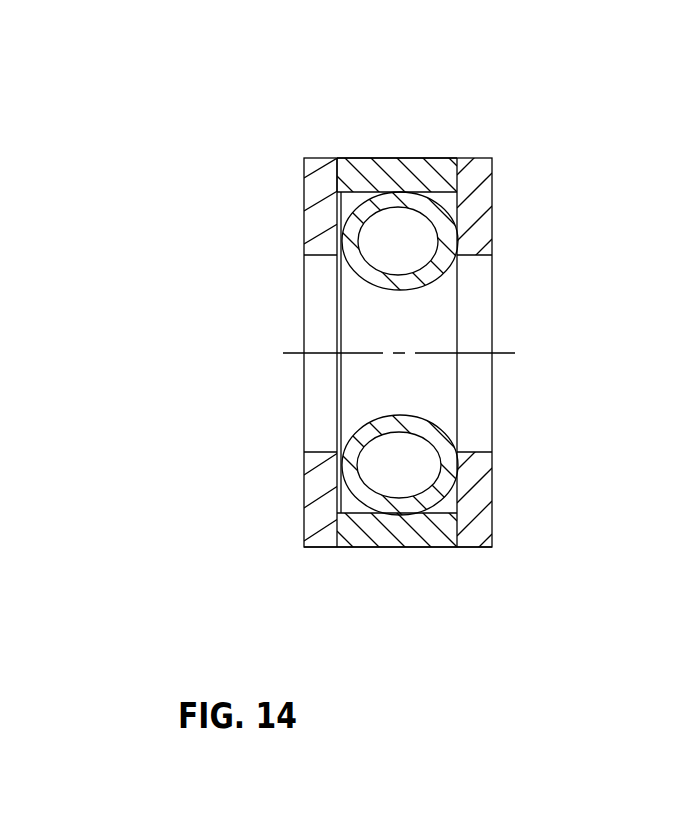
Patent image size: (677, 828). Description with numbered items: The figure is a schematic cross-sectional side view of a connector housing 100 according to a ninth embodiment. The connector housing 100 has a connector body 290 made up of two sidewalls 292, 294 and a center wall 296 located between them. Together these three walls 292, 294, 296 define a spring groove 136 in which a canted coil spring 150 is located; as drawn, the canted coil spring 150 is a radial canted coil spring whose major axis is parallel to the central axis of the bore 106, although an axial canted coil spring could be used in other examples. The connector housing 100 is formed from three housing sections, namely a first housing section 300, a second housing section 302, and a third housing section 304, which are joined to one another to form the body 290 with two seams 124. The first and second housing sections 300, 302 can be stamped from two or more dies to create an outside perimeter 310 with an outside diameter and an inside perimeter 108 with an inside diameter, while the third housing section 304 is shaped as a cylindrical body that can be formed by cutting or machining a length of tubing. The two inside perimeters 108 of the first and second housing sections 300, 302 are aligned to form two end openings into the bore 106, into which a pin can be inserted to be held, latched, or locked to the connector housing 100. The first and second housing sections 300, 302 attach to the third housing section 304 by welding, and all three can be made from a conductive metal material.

The connector housing 100 is at (272, 92).
The bore 106 is at (400, 322).
The inside perimeter 108 is at (475, 263).
The seam 124 is at (338, 548).
The spring groove 136 is at (405, 244).
The canted coil spring 150 is at (356, 270).
The body 290 is at (420, 158).
The sidewall 292 is at (303, 188).
The sidewall 294 is at (493, 184).
The center wall 296 is at (377, 158).
The first housing section 300 is at (303, 490).
The second housing section 302 is at (495, 478).
The third housing section 304 is at (356, 158).
The outside perimeter 310 is at (322, 550).